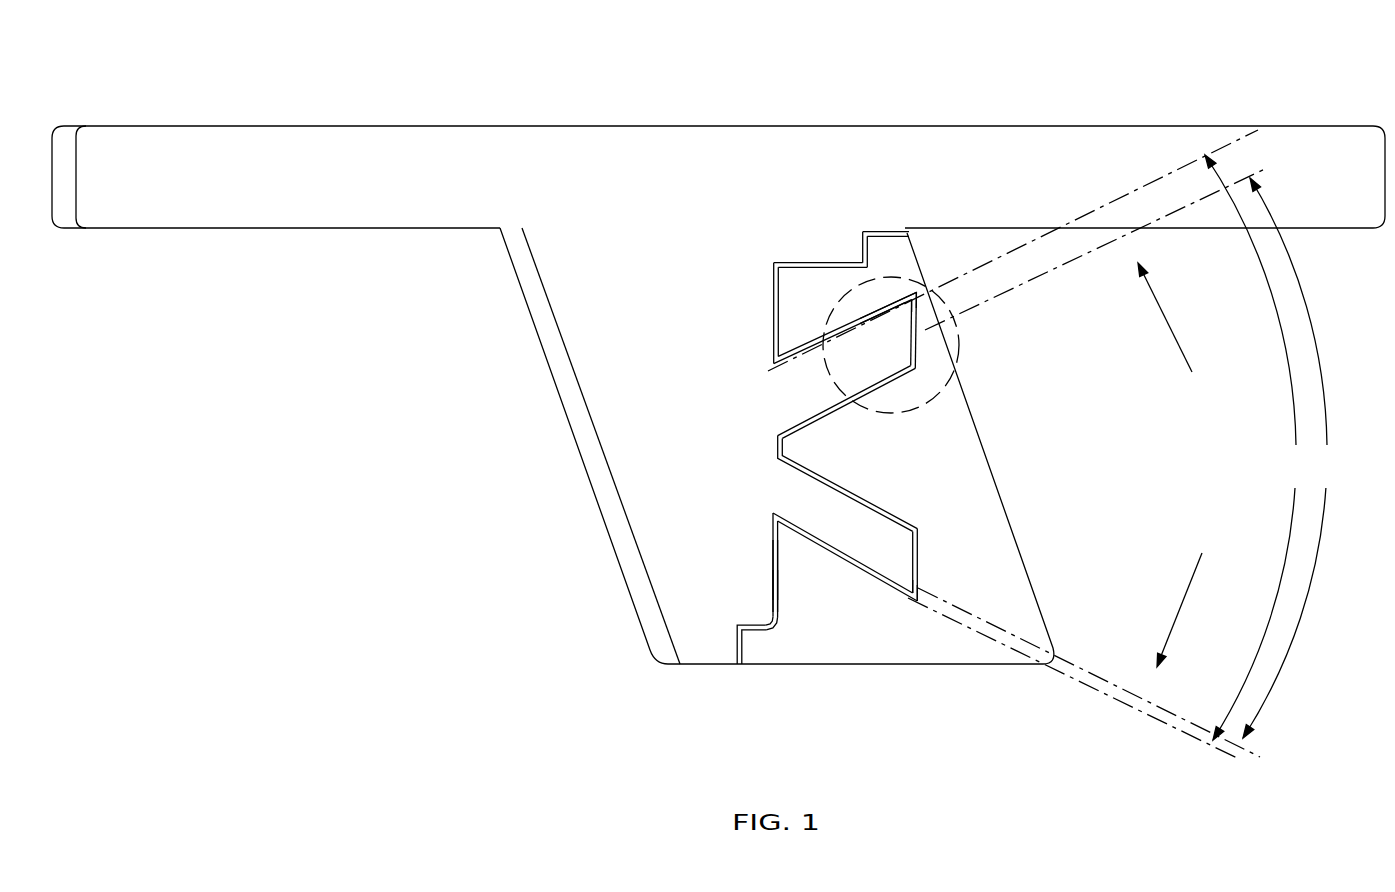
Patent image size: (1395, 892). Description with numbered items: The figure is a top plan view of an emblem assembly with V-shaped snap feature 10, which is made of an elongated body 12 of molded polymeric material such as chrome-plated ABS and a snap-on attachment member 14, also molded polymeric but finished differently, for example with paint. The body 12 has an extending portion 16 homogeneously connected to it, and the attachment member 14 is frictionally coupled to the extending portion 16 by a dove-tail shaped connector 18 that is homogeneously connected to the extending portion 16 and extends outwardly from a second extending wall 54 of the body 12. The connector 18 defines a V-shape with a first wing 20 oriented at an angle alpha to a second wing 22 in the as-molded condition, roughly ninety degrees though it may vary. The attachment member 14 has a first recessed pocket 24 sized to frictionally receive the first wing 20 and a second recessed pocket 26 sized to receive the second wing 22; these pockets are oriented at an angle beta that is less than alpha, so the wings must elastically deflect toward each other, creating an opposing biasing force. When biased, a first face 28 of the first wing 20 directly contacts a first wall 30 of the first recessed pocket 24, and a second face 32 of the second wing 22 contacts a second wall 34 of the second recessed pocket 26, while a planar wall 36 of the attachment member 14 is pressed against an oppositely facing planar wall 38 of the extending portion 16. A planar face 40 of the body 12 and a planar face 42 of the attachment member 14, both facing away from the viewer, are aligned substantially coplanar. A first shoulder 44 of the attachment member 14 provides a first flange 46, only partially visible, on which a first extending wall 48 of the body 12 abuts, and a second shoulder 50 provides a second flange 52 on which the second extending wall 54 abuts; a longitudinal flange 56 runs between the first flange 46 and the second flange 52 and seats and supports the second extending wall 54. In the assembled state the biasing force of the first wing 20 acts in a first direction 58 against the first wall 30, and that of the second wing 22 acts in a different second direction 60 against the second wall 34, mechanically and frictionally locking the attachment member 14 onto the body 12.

The emblem assembly with V-shaped snap feature 10 is at (900, 68).
The elongated body 12 is at (1188, 130).
The snap-on attachment member 14 is at (970, 462).
The extending portion 16 is at (619, 463).
The dove-tail shaped connector 18 is at (782, 378).
The first wing 20 is at (900, 341).
The second wing 22 is at (893, 545).
The first recessed pocket 24 is at (925, 365).
The second recessed pocket 26 is at (918, 531).
The first face 28 is at (888, 299).
The first wall 30 is at (921, 299).
The second face 32 is at (885, 586).
The second wall 34 is at (917, 590).
The planar wall 36 is at (769, 596).
The planar wall 38 is at (784, 568).
The planar face 40 is at (60, 232).
The planar face 42 is at (898, 668).
The first shoulder 44 is at (887, 240).
The first flange 46 is at (818, 260).
The first extending wall 48 is at (858, 252).
The second shoulder 50 is at (745, 657).
The second flange 52 is at (764, 634).
The second extending wall 54 is at (762, 626).
The longitudinal flange 56 is at (764, 374).
The first direction 58 is at (1165, 318).
The second direction 60 is at (1177, 617).